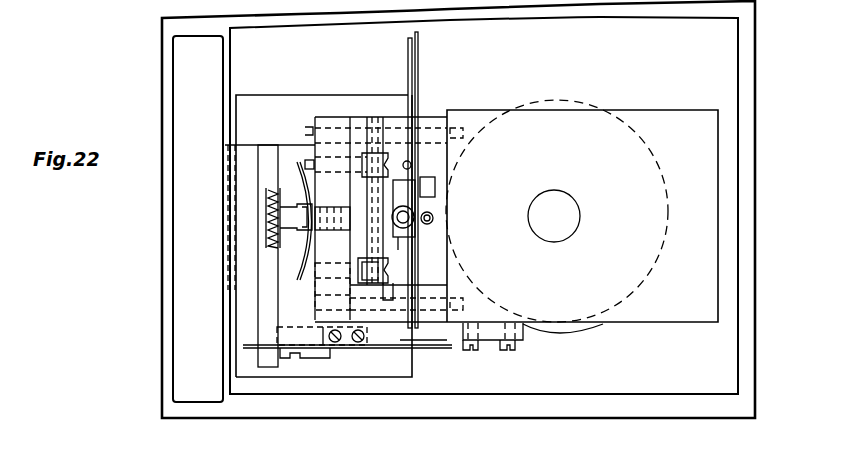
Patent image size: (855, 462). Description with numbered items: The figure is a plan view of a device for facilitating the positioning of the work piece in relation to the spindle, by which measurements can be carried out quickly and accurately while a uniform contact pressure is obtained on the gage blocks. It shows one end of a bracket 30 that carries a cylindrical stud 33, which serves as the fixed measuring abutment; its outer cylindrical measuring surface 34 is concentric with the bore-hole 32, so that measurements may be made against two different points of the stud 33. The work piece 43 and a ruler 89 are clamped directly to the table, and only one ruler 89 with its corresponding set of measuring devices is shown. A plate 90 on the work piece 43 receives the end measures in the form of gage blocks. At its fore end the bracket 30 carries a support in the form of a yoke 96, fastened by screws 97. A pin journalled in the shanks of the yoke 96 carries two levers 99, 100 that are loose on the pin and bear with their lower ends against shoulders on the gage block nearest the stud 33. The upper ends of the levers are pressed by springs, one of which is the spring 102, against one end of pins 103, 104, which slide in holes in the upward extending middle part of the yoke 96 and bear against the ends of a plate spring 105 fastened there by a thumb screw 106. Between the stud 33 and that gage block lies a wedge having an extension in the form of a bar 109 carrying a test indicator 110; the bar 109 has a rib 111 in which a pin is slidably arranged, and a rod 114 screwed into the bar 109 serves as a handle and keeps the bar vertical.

The bracket 30 is at (673, 123).
The bore-hole 32 is at (563, 218).
The stud 33 is at (575, 327).
The outer cylindrical measuring surface 34 is at (557, 338).
The work piece 43 is at (686, 381).
The ruler 89 is at (188, 393).
The plate 90 is at (362, 364).
The yoke 96 is at (331, 124).
The screws 97 is at (462, 114).
The lever 99 is at (368, 157).
The lever 100 is at (372, 280).
The spring 102 is at (388, 285).
The pin 103 is at (313, 164).
The pin 104 is at (312, 272).
The plate spring 105 is at (307, 261).
The thumb screw 106 is at (271, 187).
The bar 109 is at (437, 224).
The test indicator 110 is at (410, 72).
The rib 111 is at (405, 238).
The rod 114 is at (433, 215).